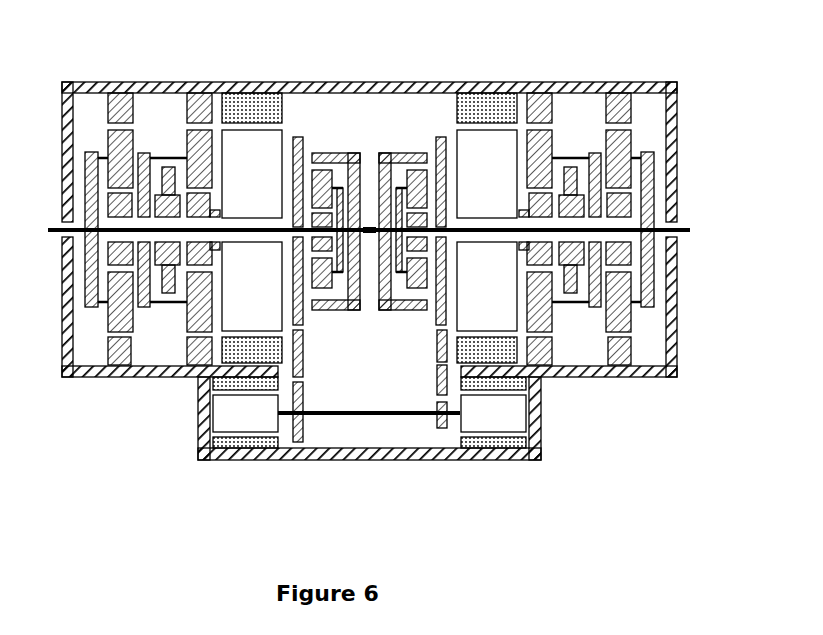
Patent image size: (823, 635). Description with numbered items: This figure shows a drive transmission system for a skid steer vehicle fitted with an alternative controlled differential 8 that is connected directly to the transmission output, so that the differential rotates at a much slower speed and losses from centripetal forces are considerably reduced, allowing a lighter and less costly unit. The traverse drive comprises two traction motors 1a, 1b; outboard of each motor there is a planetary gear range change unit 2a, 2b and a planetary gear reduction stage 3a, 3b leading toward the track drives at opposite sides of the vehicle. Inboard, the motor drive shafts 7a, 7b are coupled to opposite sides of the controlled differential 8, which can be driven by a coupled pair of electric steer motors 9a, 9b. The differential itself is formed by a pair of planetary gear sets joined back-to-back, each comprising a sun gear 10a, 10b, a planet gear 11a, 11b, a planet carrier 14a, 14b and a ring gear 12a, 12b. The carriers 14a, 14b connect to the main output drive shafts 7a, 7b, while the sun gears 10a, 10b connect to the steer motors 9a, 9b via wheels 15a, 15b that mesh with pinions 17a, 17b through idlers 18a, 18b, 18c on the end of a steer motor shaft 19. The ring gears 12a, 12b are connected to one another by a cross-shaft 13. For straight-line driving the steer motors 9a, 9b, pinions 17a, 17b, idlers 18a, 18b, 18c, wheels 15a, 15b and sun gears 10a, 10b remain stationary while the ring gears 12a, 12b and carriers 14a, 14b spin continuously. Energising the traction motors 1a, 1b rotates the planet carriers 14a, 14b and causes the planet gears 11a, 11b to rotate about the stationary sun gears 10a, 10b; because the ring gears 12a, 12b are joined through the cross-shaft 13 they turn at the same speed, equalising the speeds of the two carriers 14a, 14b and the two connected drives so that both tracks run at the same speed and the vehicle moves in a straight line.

The traction motor 1a is at (253, 152).
The traction motor 1b is at (485, 160).
The planetary gear range change unit 2a is at (197, 170).
The planetary gear range change unit 2b is at (548, 170).
The planetary gear reduction stage 3a is at (120, 195).
The planetary gear reduction stage 3b is at (620, 214).
The motor drive shaft 7a is at (227, 231).
The motor drive shaft 7b is at (498, 230).
The controlled differential 8 is at (372, 107).
The steer motor 9a is at (258, 413).
The steer motor 9b is at (482, 417).
The sun gear 10a is at (322, 247).
The sun gear 10b is at (420, 247).
The planet gear 11a is at (320, 192).
The planet gear 11b is at (418, 183).
The ring gear 12a is at (352, 270).
The ring gear 12b is at (380, 270).
The cross-shaft 13 is at (370, 230).
The planet carrier 14a is at (342, 250).
The planet carrier 14b is at (398, 203).
The wheel 15a is at (298, 202).
The wheel 15b is at (442, 170).
The pinion 17a is at (298, 422).
The pinion 17b is at (442, 423).
The idler 18a is at (297, 362).
The idler 18b is at (442, 342).
The idler 18c is at (443, 383).
The steer motor shaft 19 is at (362, 413).